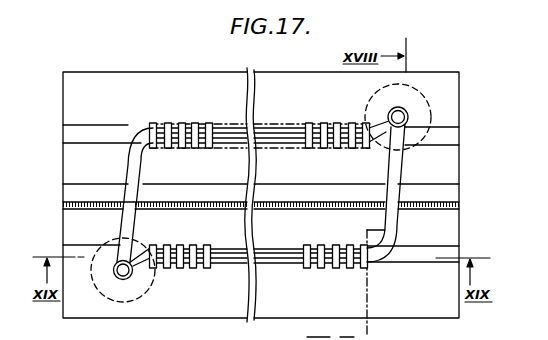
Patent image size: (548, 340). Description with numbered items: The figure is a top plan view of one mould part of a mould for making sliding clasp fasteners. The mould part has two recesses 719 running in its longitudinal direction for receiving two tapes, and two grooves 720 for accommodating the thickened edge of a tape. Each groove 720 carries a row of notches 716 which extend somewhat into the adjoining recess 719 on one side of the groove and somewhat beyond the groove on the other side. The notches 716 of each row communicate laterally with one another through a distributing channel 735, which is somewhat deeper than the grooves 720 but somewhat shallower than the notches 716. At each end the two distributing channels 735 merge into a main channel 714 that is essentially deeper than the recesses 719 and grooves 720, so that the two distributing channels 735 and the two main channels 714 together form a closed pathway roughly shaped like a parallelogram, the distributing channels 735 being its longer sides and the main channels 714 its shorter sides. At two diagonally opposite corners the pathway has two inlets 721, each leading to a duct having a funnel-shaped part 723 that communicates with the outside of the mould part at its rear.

The main channel 714 is at (127, 163).
The notches 716 is at (323, 124).
The recess 719 is at (438, 157).
The groove 720 is at (441, 133).
The inlet 721 is at (408, 116).
The funnel-shaped part 723 is at (424, 92).
The distributing channel 735 is at (269, 131).